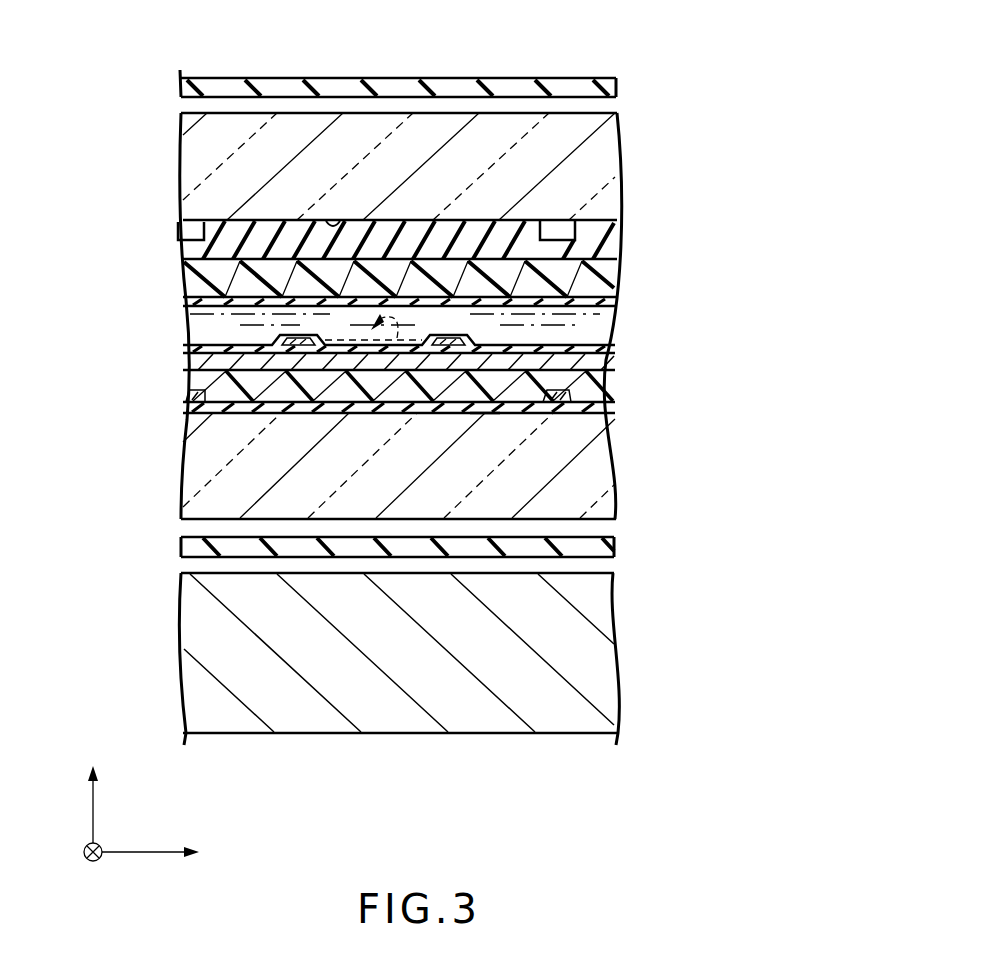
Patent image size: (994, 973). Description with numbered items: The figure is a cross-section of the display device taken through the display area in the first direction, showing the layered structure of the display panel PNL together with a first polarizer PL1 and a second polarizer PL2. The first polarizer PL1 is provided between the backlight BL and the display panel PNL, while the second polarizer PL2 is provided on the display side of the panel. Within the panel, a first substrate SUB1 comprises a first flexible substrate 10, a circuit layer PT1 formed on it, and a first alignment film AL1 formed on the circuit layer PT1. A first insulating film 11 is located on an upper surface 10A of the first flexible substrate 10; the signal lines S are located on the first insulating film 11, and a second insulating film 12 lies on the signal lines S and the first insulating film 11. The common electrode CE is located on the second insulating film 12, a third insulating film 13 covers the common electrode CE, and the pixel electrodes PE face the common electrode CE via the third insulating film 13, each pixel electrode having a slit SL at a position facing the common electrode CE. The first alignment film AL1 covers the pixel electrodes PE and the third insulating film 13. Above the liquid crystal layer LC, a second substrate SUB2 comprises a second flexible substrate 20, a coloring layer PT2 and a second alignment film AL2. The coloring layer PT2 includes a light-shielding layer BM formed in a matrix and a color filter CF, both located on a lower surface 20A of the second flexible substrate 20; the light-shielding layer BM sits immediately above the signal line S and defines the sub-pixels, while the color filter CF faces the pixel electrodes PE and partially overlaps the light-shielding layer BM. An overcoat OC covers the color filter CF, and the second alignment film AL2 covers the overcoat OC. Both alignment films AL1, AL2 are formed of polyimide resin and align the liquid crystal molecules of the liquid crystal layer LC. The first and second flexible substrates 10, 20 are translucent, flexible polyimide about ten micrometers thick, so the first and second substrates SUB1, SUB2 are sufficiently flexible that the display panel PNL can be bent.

The display panel PNL is at (603, 72).
The second polarizer PL2 is at (616, 88).
The second flexible substrate 20 is at (600, 163).
The lower surface 20A is at (333, 220).
The color filter CF is at (392, 240).
The light-shielding layer BM is at (201, 222).
The overcoat OC is at (590, 280).
The second alignment film AL2 is at (580, 308).
The liquid crystal layer LC is at (577, 330).
The first alignment film AL1 is at (578, 347).
The pixel electrodes PE is at (440, 335).
The common electrode CE is at (507, 345).
The third insulating film 13 is at (600, 364).
The second insulating film 12 is at (605, 390).
The first insulating film 11 is at (605, 414).
The first flexible substrate 10 is at (587, 483).
The upper surface 10A is at (484, 416).
The signal lines S is at (195, 402).
The slit SL is at (376, 342).
The first polarizer PL1 is at (583, 550).
The backlight BL is at (588, 656).
The first substrate SUB1 is at (431, 561).
The second substrate SUB2 is at (431, 154).
The circuit layer PT1 is at (376, 561).
The coloring layer PT2 is at (359, 161).